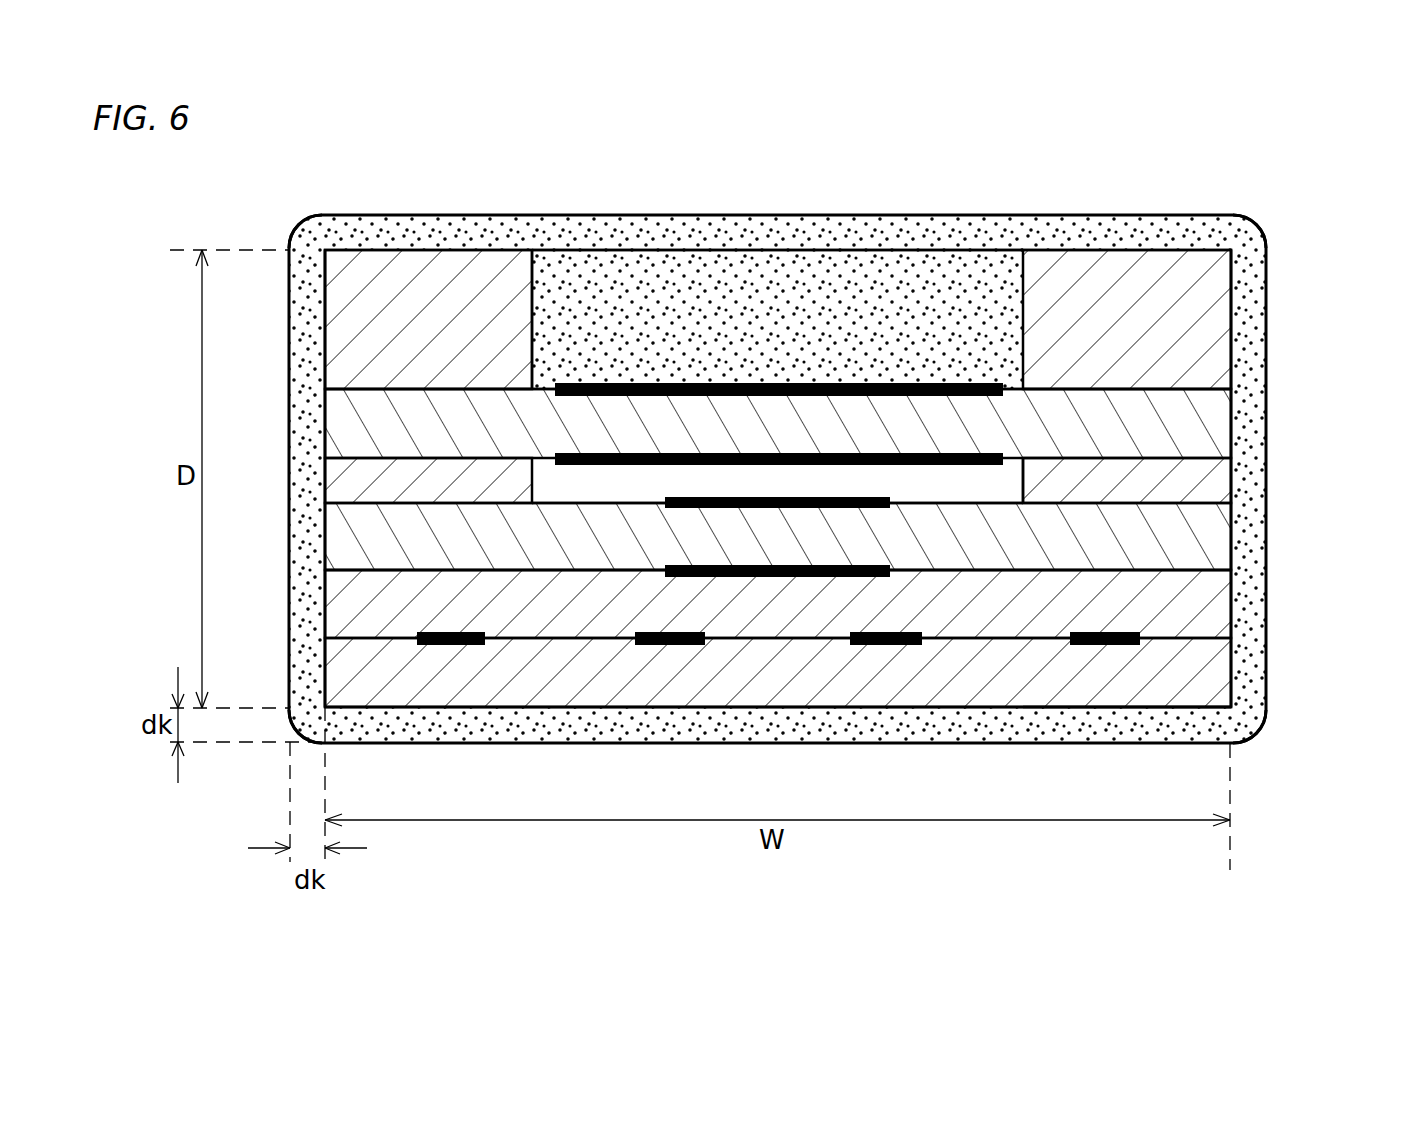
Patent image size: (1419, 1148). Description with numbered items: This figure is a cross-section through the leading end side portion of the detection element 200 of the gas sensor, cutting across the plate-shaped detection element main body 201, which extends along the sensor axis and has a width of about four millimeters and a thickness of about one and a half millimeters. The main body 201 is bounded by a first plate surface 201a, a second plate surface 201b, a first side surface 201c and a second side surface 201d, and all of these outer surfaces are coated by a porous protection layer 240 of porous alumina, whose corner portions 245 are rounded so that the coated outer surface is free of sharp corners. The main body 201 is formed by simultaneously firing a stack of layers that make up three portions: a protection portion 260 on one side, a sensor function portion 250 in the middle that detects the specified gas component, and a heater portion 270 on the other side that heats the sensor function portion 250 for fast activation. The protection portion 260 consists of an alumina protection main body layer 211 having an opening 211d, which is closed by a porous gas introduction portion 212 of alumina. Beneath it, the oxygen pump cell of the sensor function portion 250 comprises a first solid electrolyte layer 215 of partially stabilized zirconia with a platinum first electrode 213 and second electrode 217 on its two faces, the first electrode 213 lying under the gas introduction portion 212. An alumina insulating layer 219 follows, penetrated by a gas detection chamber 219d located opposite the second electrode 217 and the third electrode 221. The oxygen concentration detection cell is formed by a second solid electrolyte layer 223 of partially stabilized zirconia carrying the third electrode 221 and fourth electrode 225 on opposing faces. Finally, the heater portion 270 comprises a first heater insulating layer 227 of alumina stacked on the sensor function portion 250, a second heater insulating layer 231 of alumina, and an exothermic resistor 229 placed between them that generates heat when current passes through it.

The detection element 200 is at (1184, 180).
The detection element main body 201 is at (1370, 255).
The first plate surface 201a is at (1078, 253).
The second plate surface 201b is at (1145, 708).
The first side surface 201c is at (324, 362).
The second side surface 201d is at (1232, 674).
The porous protection layer 240 is at (410, 215).
The corner portions 245 is at (300, 223).
The protection portion 260 is at (1298, 255).
The sensor function portion 250 is at (1298, 392).
The heater portion 270 is at (1298, 571).
The protection main body layer 211 is at (328, 305).
The opening 211d is at (533, 310).
The porous gas introduction portion 212 is at (717, 282).
The first electrode 213 is at (658, 383).
The first solid electrolyte layer 215 is at (342, 428).
The second electrode 217 is at (765, 453).
The insulating layer 219 is at (348, 480).
The gas detection chamber 219d is at (897, 485).
The third electrode 221 is at (747, 508).
The second solid electrolyte layer 223 is at (333, 537).
The fourth electrode 225 is at (803, 577).
The first heater insulating layer 227 is at (345, 602).
The exothermic resistor 229 is at (657, 647).
The second heater insulating layer 231 is at (335, 664).